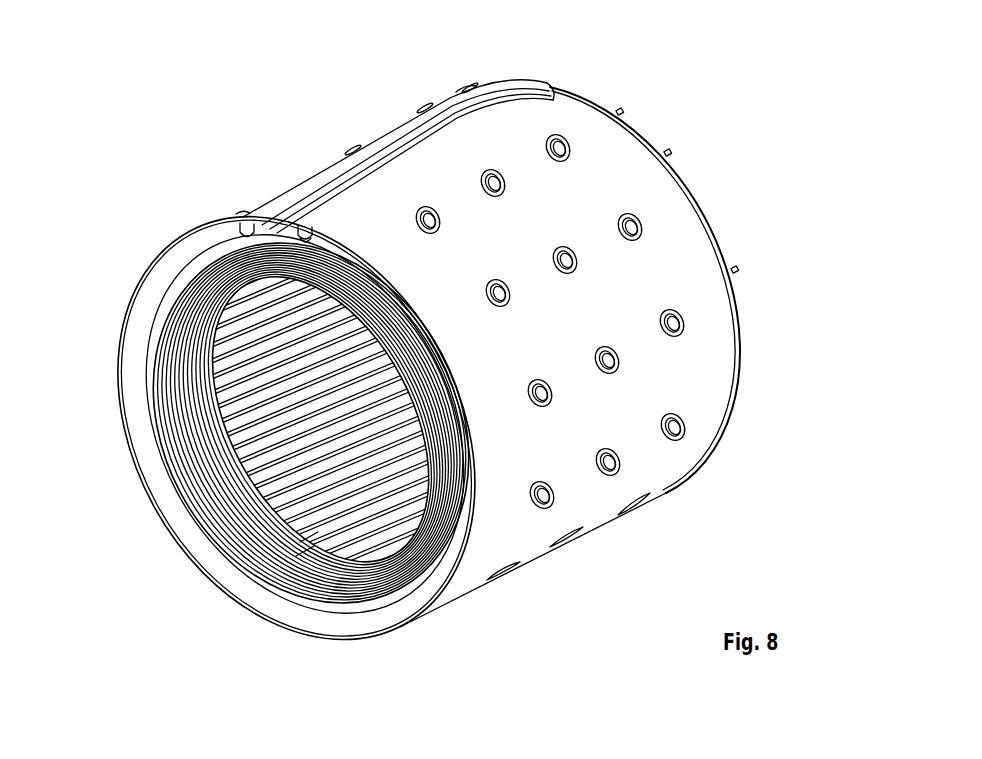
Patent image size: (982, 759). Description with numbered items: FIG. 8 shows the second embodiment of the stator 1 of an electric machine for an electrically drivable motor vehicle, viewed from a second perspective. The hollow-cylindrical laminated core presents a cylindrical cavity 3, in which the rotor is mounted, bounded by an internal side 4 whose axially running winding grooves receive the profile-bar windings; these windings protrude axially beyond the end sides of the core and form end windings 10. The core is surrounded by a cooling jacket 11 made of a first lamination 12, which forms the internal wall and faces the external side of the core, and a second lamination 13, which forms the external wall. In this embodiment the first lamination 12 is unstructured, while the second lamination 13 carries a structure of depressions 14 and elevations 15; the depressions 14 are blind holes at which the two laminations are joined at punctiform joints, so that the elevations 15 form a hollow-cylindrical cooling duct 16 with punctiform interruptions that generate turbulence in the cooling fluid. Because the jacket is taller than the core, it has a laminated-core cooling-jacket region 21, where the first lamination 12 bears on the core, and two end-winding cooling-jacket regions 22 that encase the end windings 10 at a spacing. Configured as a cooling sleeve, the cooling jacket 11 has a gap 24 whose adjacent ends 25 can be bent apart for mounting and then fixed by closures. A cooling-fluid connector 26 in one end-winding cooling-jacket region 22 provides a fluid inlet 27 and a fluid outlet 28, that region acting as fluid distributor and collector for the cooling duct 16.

The stator 1 is at (709, 149).
The cylindrical cavity 3 is at (275, 471).
The internal side 4 is at (310, 527).
The end windings 10 is at (182, 445).
The cooling jacket 11 is at (595, 530).
The first lamination 12 is at (147, 333).
The second lamination 13 is at (702, 432).
The depressions 14 is at (637, 227).
The elevations 15 is at (540, 330).
The cooling duct 16 is at (660, 263).
The laminated-core cooling-jacket region 21 is at (350, 147).
The end-winding cooling-jacket regions 22 is at (465, 88).
The gap 24 is at (413, 155).
The ends 25 is at (537, 80).
The cooling-fluid connector 26 is at (305, 227).
The fluid inlet 27 is at (325, 230).
The fluid outlet 28 is at (243, 228).